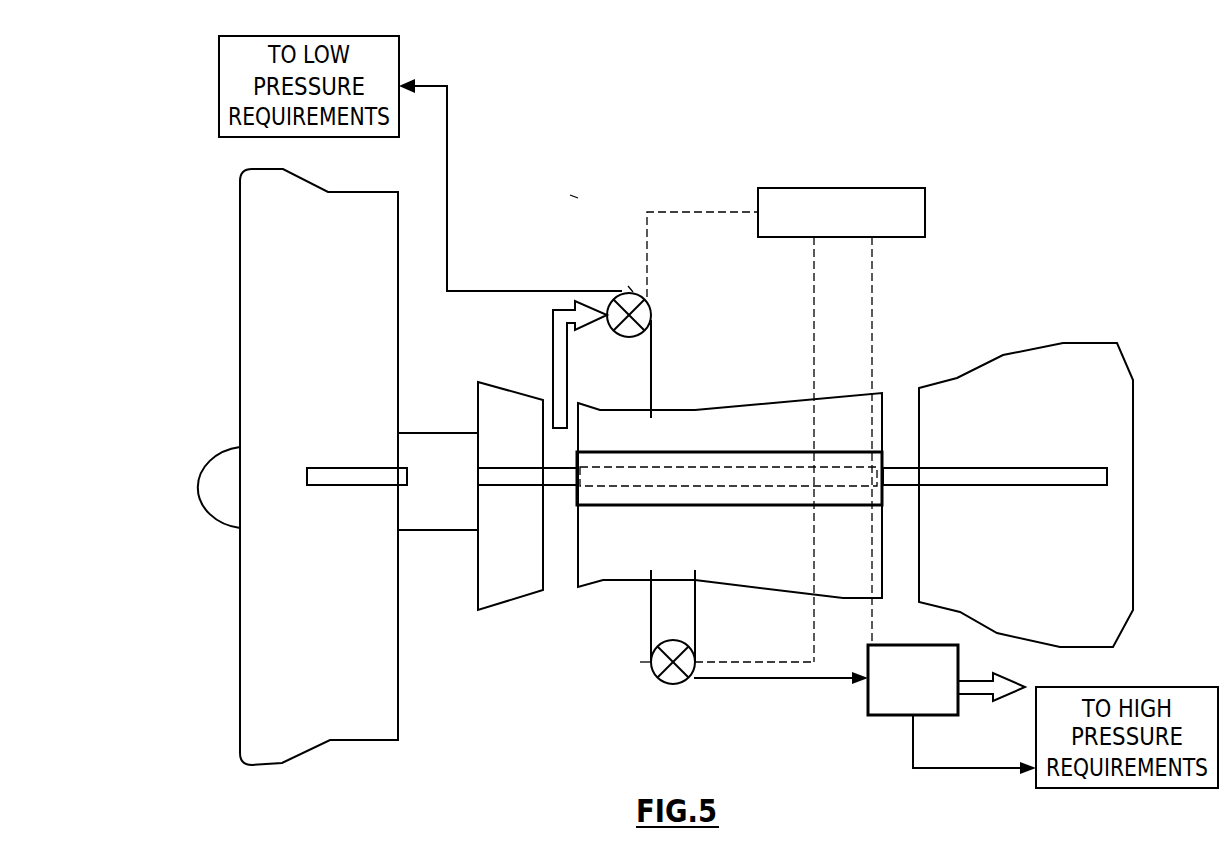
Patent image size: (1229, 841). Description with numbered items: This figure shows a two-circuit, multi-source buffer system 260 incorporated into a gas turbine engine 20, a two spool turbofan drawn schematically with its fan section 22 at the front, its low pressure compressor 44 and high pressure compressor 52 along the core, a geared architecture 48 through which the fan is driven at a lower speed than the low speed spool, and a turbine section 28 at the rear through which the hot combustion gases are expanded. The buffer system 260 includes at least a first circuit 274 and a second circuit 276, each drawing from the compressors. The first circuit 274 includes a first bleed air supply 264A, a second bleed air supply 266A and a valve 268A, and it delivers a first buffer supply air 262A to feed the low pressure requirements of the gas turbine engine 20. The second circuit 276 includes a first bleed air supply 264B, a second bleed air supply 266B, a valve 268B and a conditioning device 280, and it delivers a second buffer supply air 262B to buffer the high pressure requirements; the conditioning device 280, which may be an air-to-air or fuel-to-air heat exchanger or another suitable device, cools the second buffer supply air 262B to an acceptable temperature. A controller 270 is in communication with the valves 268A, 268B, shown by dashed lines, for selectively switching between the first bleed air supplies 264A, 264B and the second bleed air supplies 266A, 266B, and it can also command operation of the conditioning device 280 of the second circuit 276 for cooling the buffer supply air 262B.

The gas turbine engine 20 is at (689, 467).
The fan section 22 is at (333, 653).
The turbine section 28 is at (1045, 567).
The low pressure compressor 44 is at (529, 563).
The geared architecture 48 is at (454, 493).
The high pressure compressor 52 is at (755, 561).
The buffer system 260 is at (574, 188).
The first buffer supply air 262A is at (551, 291).
The second buffer supply air 262B is at (798, 679).
The first bleed air supply 264A is at (553, 365).
The first bleed air supply 264B is at (651, 620).
The second bleed air supply 266A is at (652, 378).
The second bleed air supply 266B is at (695, 605).
The valve 268A is at (652, 311).
The valve 268B is at (663, 685).
The controller 270 is at (843, 188).
The first circuit 274 is at (630, 282).
The second circuit 276 is at (640, 662).
The conditioning device 280 is at (890, 718).